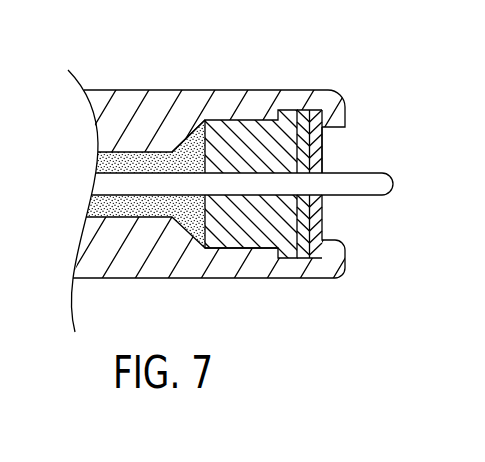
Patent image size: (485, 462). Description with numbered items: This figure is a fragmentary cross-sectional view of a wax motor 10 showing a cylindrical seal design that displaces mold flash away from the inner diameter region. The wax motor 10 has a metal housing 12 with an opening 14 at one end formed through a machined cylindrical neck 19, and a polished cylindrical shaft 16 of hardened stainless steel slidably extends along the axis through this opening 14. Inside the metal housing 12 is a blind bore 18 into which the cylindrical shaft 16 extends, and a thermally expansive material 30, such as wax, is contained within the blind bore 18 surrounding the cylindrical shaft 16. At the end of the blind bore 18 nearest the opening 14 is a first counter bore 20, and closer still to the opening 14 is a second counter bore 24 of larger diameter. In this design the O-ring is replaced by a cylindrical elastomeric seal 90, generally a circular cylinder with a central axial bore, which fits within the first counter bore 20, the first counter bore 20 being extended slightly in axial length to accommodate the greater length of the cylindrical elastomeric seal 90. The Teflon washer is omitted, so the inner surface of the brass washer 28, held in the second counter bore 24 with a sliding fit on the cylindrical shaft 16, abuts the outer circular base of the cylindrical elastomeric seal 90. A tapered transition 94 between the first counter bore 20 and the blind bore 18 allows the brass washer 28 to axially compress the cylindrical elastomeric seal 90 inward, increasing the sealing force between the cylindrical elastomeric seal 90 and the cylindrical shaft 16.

The wax motor 10 is at (347, 36).
The metal housing 12 is at (102, 106).
The opening 14 is at (366, 125).
The cylindrical shaft 16 is at (377, 197).
The blind bore 18 is at (110, 160).
The cylindrical neck 19 is at (363, 275).
The first counter bore 20 is at (242, 119).
The second counter bore 24 is at (291, 111).
The brass washer 28 is at (322, 158).
The thermally expansive material 30 is at (112, 203).
The cylindrical elastomeric seal 90 is at (238, 237).
The tapered transition 94 is at (163, 118).